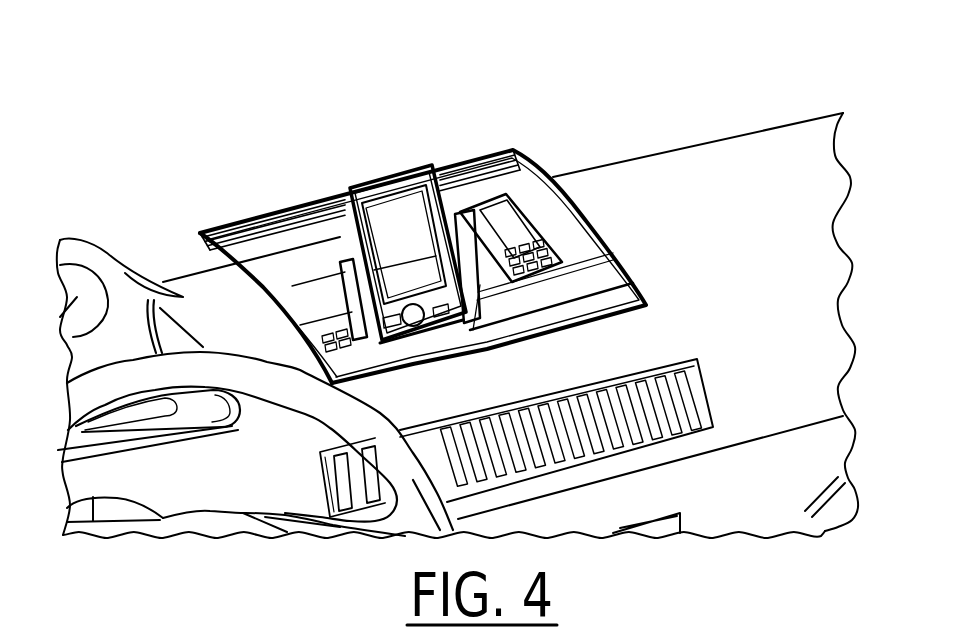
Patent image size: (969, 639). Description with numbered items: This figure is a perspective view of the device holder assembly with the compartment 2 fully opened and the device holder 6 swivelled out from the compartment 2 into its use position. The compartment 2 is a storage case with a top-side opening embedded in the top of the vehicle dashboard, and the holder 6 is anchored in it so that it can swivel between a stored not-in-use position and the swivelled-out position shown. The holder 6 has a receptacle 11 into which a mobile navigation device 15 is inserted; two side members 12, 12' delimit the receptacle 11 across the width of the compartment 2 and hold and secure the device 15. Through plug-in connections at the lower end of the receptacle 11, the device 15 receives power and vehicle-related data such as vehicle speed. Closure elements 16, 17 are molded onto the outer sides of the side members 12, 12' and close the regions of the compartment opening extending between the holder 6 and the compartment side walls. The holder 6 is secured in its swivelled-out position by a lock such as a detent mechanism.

The compartment 2 is at (238, 214).
The device holder 6 is at (336, 200).
The receptacle 11 is at (450, 205).
The side member 12 is at (312, 238).
The side member 12' is at (511, 182).
The mobile navigation device 15 is at (424, 140).
The closure element 16 is at (290, 307).
The closure element 17 is at (600, 240).